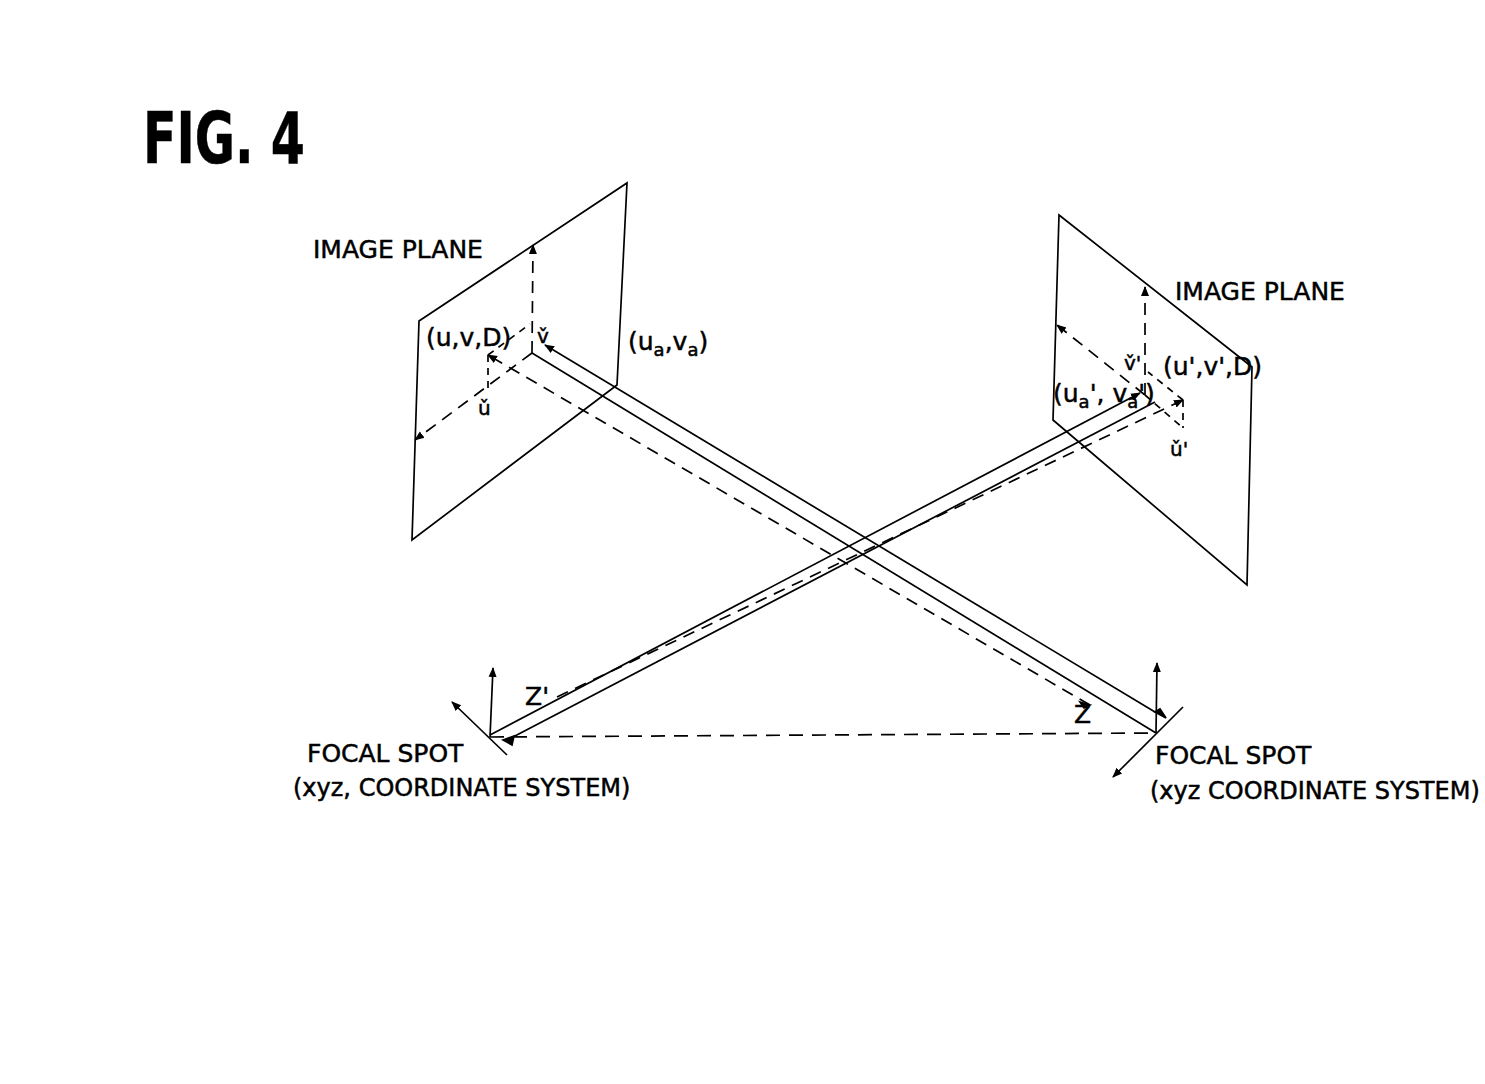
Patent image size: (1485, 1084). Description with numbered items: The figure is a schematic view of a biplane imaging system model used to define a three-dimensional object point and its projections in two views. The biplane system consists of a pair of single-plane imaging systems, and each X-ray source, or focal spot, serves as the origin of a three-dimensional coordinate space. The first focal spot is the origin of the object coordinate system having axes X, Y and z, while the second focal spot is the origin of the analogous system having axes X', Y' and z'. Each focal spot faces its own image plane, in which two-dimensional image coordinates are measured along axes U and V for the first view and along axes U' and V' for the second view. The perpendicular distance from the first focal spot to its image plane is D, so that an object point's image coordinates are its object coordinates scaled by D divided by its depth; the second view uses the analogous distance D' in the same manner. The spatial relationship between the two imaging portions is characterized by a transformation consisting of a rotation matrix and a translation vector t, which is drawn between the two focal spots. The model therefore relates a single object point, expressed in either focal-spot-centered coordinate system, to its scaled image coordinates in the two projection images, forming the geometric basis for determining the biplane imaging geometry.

The perpendicular distance between the x-ray focal spot and the image plane D is at (789, 531).
The perpendicular distance between the second focal spot and the second image plane D' is at (870, 548).
The u axis of image plane coordinate system U is at (462, 404).
The v axis of image plane coordinate system V is at (532, 280).
The u' axis of second image plane coordinate system U' is at (1089, 352).
The v' axis of second image plane coordinate system V' is at (1160, 325).
The x axis of object coordinate system X is at (1137, 749).
The y axis of object coordinate system Y is at (1144, 691).
The x' axis of second object coordinate system X' is at (467, 715).
The y' axis of second object coordinate system Y' is at (509, 692).
The translation vector t is at (786, 697).